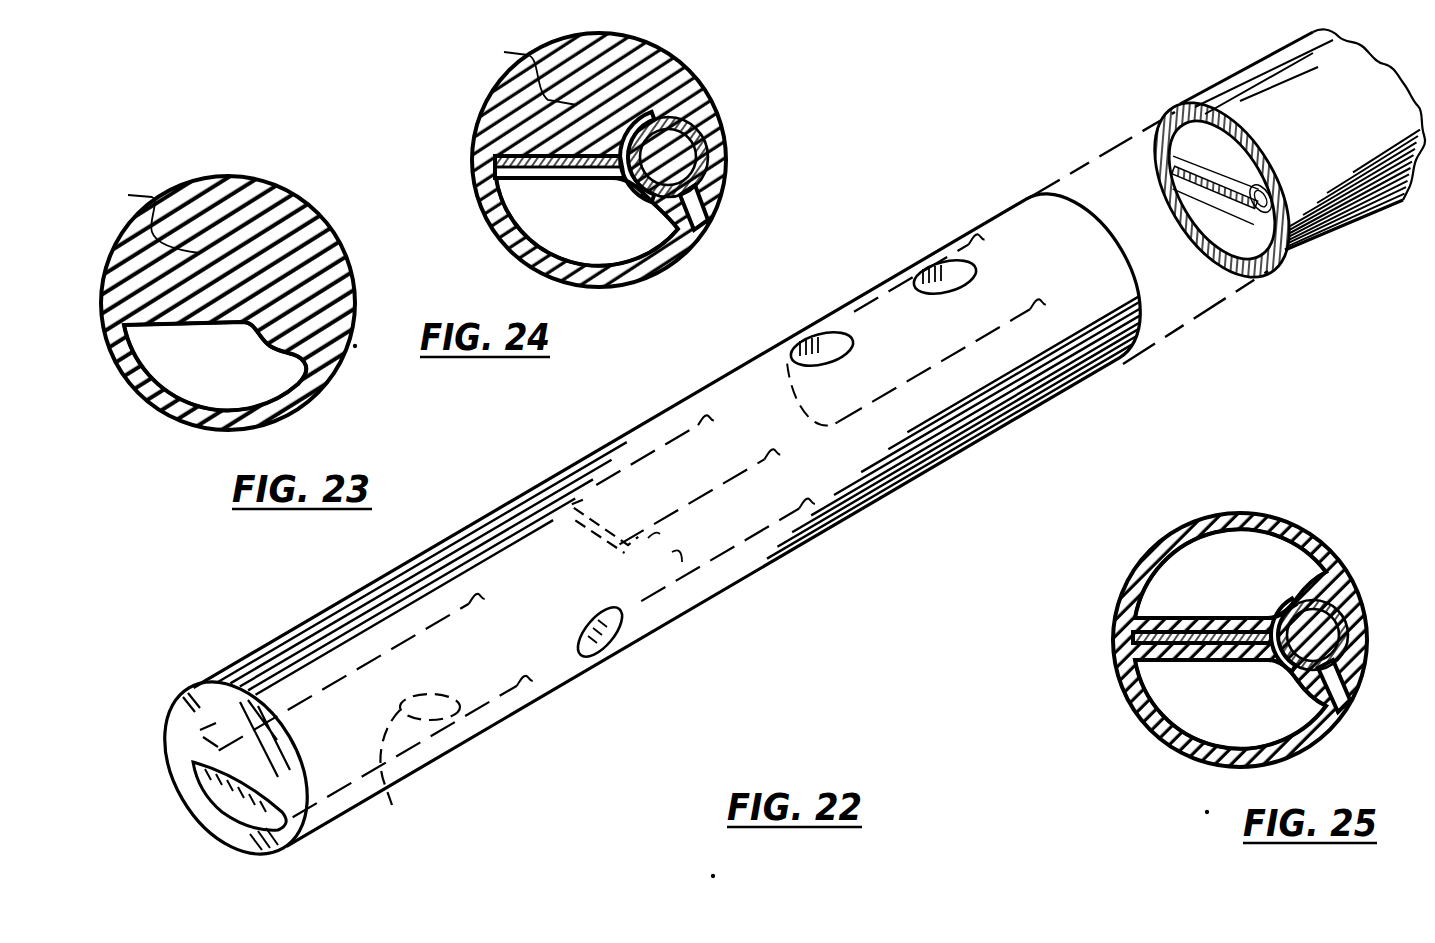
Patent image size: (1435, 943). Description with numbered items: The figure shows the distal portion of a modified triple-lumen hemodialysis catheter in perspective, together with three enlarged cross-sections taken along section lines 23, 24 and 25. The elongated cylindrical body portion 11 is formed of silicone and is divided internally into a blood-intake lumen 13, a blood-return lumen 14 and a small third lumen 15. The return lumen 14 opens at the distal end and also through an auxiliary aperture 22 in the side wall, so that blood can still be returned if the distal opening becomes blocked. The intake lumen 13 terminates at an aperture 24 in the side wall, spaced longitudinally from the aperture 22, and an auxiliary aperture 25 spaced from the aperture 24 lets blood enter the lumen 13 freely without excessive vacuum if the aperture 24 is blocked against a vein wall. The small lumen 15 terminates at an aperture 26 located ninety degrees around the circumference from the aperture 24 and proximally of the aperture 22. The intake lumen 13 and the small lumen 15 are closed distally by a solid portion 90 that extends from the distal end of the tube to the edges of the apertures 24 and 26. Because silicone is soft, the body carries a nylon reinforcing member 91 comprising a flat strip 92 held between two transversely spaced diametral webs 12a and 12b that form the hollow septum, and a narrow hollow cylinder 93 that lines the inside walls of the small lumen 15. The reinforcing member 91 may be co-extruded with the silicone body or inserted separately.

In FIG. 22, the body portion 11 is at (993, 433).
In FIG. 23, the body portion 11 is at (134, 393).
In FIG. 24, the body portion 11 is at (512, 253).
In FIG. 25, the body portion 11 is at (1148, 727).
In FIG. 25, the diametral web 12a is at (1168, 630).
In FIG. 24, the diametral web 12b is at (532, 185).
In FIG. 25, the diametral web 12b is at (1165, 646).
In FIG. 25, the blood-intake lumen 13 is at (1264, 587).
In FIG. 23, the blood-return lumen 14 is at (231, 372).
In FIG. 24, the blood-return lumen 14 is at (627, 236).
In FIG. 25, the blood-return lumen 14 is at (1264, 722).
In FIG. 24, the third lumen 15 is at (683, 165).
In FIG. 25, the third lumen 15 is at (1327, 645).
In FIG. 22, the auxiliary aperture 22 is at (388, 792).
In FIG. 22, the section line 23- 23 is at (468, 547).
In FIG. 22, the aperture 24 is at (828, 332).
In FIG. 22, the auxiliary aperture 25 is at (976, 279).
In FIG. 22, the aperture 26 is at (617, 626).
In FIG. 22, the solid portion 90 is at (185, 722).
In FIG. 23, the solid portion 90 is at (151, 220).
In FIG. 24, the solid portion 90 is at (527, 74).
In FIG. 22, the reinforcing member 91 is at (680, 474).
In FIG. 24, the flat strip 92 is at (487, 201).
In FIG. 25, the flat strip 92 is at (1120, 685).
In FIG. 24, the hollow cylinder 93 is at (690, 202).
In FIG. 25, the hollow cylinder 93 is at (1338, 688).